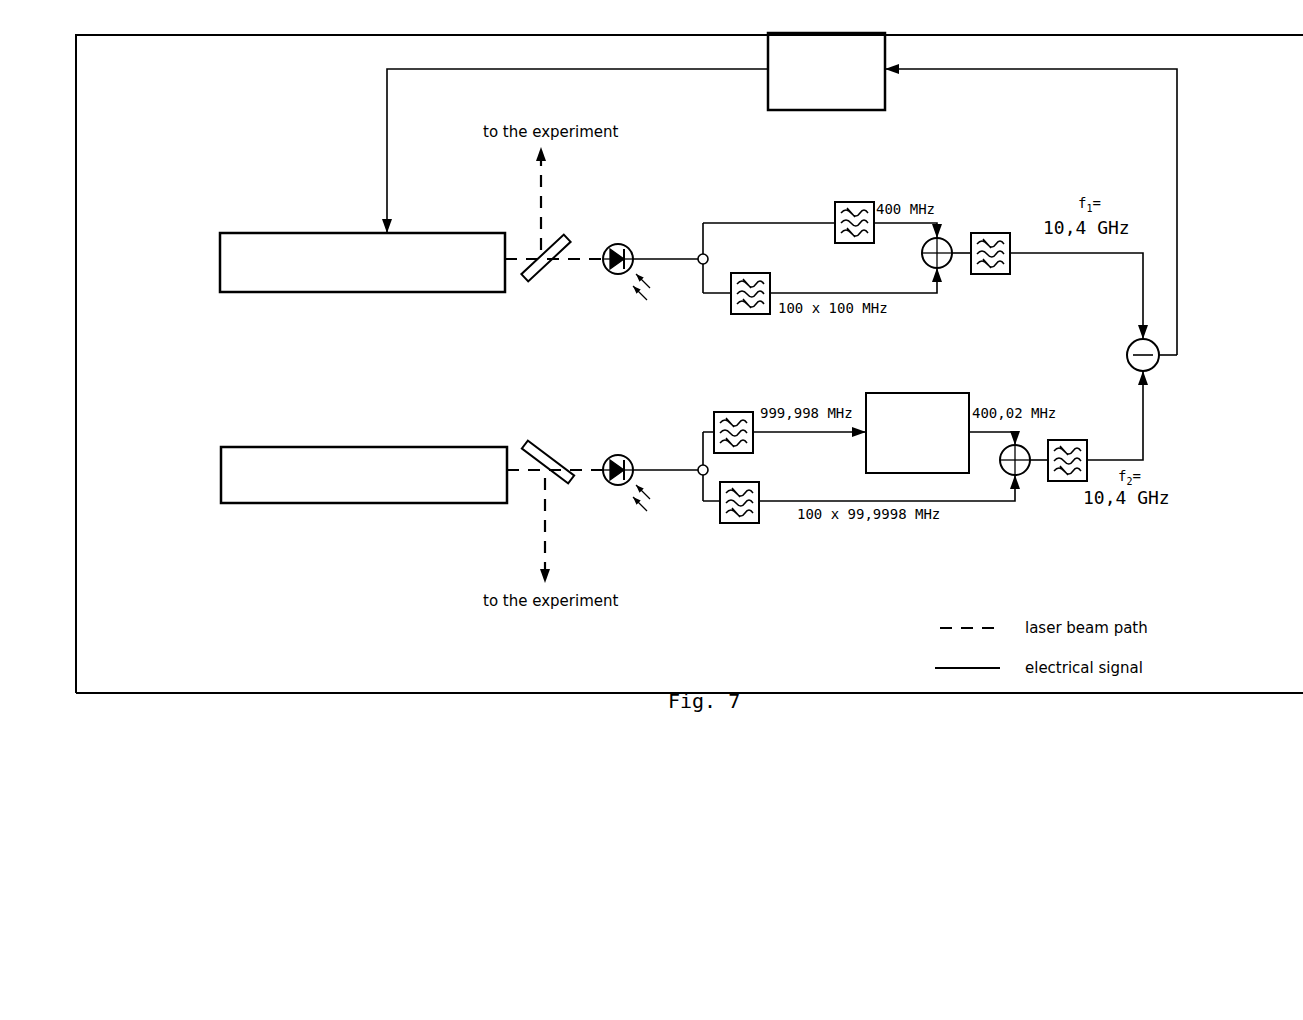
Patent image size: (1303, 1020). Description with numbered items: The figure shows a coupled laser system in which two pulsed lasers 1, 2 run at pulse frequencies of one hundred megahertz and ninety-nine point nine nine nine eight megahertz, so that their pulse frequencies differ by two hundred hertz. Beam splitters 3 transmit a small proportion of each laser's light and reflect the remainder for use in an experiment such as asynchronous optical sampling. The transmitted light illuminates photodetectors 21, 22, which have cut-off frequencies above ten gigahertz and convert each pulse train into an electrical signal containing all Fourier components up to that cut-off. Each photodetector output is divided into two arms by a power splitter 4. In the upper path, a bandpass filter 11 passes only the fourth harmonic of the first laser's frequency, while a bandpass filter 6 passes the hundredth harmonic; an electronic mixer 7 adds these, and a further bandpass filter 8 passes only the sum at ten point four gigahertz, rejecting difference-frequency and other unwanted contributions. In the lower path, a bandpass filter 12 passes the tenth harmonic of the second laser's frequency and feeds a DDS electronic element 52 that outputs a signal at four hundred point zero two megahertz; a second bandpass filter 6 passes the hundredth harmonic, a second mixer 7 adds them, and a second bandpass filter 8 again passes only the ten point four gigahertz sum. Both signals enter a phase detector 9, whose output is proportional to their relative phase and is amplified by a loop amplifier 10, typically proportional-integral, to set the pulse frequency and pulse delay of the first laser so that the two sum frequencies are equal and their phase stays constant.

The pulsed laser 1 is at (299, 228).
The pulsed laser 2 is at (322, 444).
The beam splitter 3 is at (537, 294).
The power splitter 4 is at (697, 268).
The bandpass filter 6 is at (746, 322).
The electronic mixer 7 is at (949, 240).
The bandpass filter 8 is at (983, 281).
The phase detector 9 is at (1122, 356).
The loop amplifier 10 is at (826, 71).
The bandpass filter 11 is at (832, 198).
The bandpass filter 12 is at (712, 412).
The photodetector 21 is at (617, 285).
The photodetector 22 is at (616, 446).
The DDS electronic element 52 is at (920, 390).